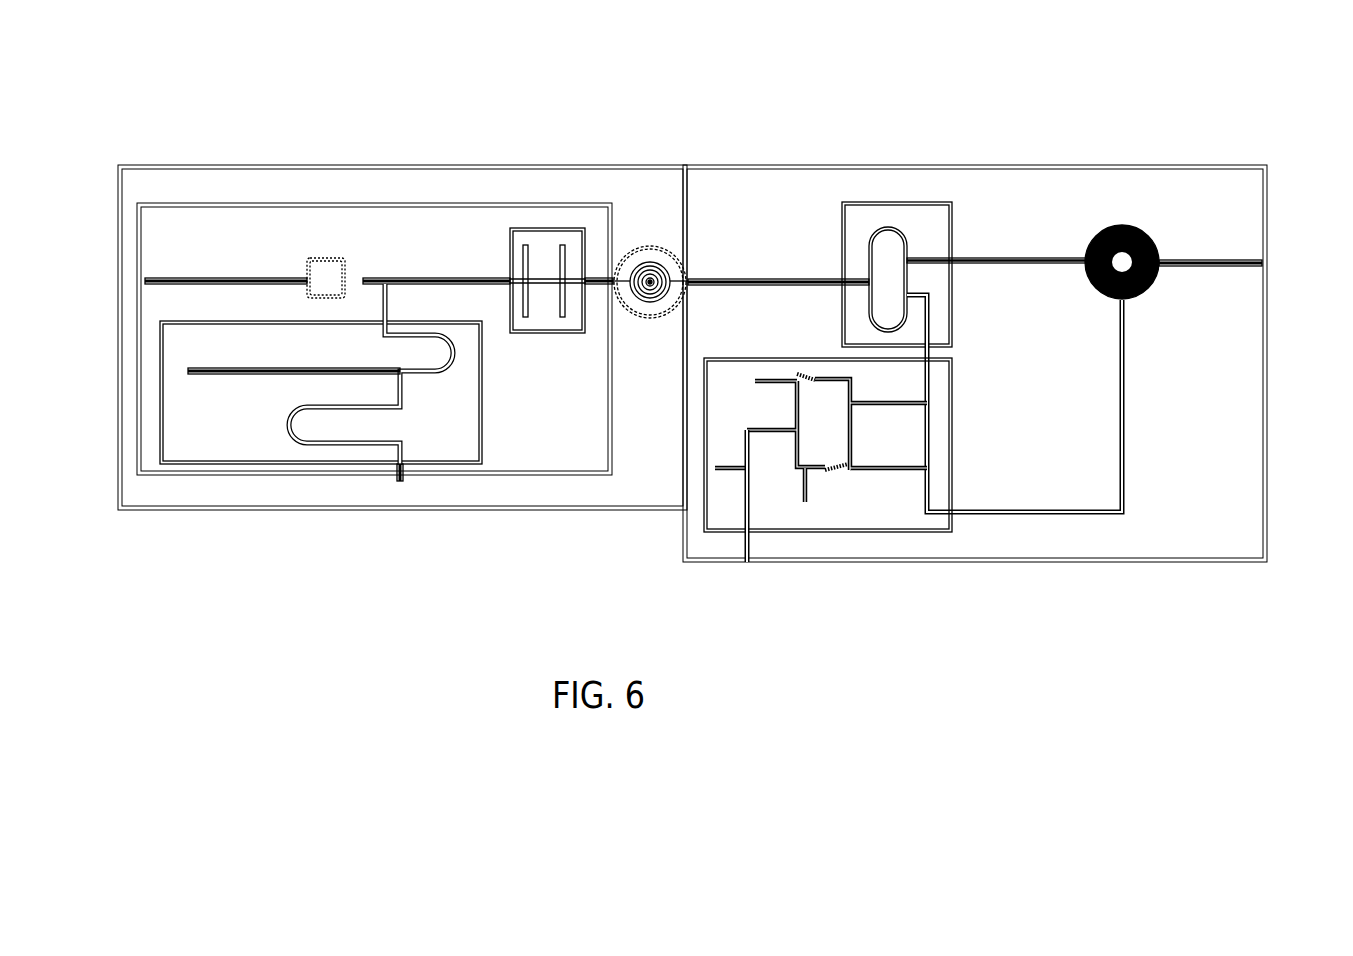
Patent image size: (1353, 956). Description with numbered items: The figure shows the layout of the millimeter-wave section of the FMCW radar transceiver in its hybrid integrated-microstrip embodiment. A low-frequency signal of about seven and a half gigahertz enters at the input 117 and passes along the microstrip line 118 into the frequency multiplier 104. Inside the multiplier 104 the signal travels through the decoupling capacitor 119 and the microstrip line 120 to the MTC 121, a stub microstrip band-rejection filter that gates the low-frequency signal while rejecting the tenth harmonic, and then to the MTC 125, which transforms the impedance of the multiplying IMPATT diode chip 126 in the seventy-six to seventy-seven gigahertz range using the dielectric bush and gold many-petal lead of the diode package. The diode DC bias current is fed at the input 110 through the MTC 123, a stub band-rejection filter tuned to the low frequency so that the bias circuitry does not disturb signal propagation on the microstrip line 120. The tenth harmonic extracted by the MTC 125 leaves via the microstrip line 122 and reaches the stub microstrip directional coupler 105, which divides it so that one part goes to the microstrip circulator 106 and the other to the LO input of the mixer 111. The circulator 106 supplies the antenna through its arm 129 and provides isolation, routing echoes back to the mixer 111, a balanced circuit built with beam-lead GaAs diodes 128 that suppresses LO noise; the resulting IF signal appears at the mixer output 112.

The frequency multiplier 104 is at (380, 295).
The directional coupler 105 is at (982, 297).
The microstrip circulator 106 is at (975, 323).
The input 110 is at (445, 515).
The mixer 111 is at (877, 496).
The mixer output 112 is at (681, 523).
The input 117 is at (92, 280).
The microstrip line 118 is at (226, 180).
The decoupling capacitor 119 is at (336, 185).
The microstrip line 120 is at (436, 179).
The matching-transforming circuit 121 is at (561, 206).
The microstrip line 122 is at (815, 183).
The matching-transforming circuit 123 is at (321, 428).
The matching-transforming circuit 125 is at (654, 196).
The multiplying IMPATT diode chip 126 is at (742, 182).
The beam-lead GaAs diodes 128 is at (820, 511).
The arm of the circulator 129 is at (1273, 265).